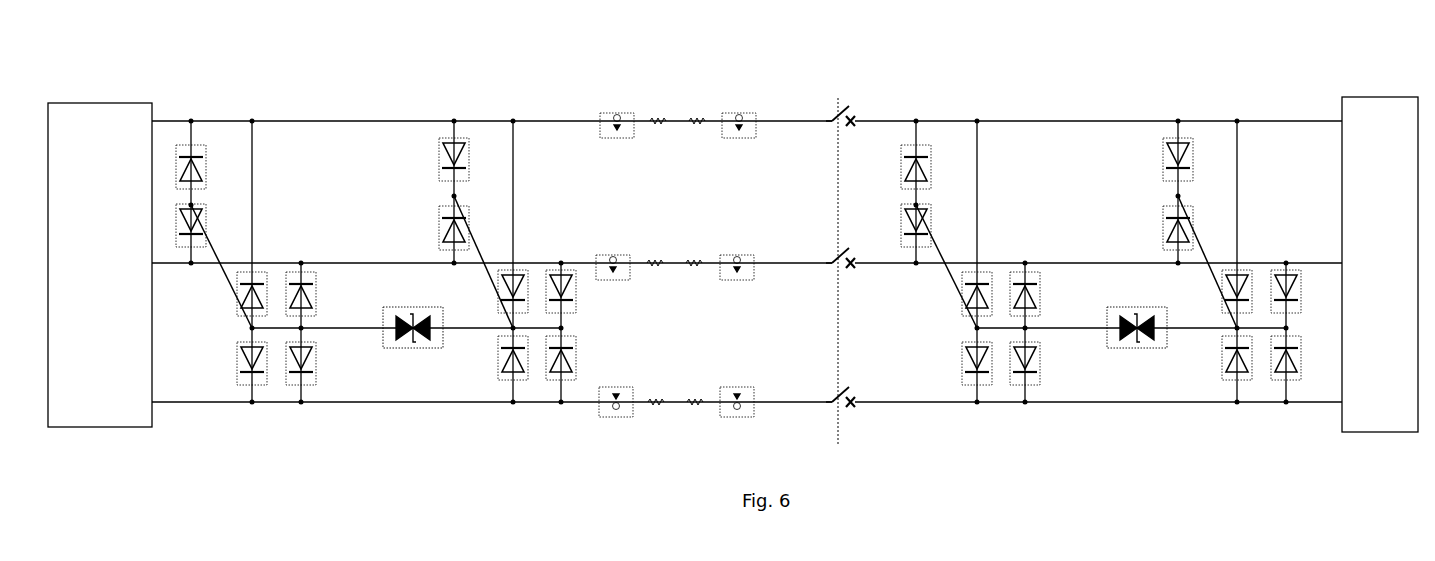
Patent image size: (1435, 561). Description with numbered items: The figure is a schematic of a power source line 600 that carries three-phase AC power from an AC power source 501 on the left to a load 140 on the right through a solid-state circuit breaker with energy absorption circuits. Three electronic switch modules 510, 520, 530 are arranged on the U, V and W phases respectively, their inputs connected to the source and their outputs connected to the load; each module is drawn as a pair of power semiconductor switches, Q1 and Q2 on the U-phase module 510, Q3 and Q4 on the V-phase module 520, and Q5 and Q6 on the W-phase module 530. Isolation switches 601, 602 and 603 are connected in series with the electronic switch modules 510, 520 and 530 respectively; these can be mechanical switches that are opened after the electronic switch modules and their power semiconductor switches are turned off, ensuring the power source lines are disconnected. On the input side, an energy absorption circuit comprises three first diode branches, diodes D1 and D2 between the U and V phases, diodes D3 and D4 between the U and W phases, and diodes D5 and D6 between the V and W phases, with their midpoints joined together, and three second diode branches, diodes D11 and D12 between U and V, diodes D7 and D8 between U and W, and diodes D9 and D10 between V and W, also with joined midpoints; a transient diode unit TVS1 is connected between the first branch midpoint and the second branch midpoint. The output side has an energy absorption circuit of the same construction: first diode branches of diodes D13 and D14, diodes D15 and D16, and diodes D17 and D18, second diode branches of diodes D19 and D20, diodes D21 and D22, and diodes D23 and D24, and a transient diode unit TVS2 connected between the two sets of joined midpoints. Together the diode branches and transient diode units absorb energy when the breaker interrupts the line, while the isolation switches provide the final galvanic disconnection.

The power source line 600 is at (733, 238).
The isolation switch 601 is at (828, 110).
The isolation switch 602 is at (828, 248).
The isolation switch 603 is at (828, 387).
The electronic switch module 510 is at (678, 138).
The electronic switch module 520 is at (675, 285).
The electronic switch module 530 is at (676, 407).
The AC power source 501 is at (100, 265).
The load 140 is at (1380, 264).
The diode D1 is at (199, 167).
The diode D2 is at (199, 225).
The diode D3 is at (242, 294).
The diode D4 is at (242, 363).
The diode D5 is at (309, 294).
The diode D6 is at (309, 363).
The diode D7 is at (502, 358).
The diode D8 is at (501, 291).
The diode D9 is at (554, 291).
The diode D10 is at (552, 358).
The diode D11 is at (442, 228).
The diode D12 is at (440, 159).
The diode D13 is at (928, 167).
The diode D14 is at (928, 225).
The diode D15 is at (963, 295).
The diode D16 is at (963, 363).
The diode D17 is at (1036, 363).
The diode D18 is at (1036, 297).
The diode D19 is at (1165, 159).
The diode D20 is at (1165, 228).
The diode D21 is at (1224, 291).
The diode D22 is at (1224, 358).
The diode D23 is at (1277, 358).
The diode D24 is at (1277, 291).
The transient diode unit TVS1 is at (413, 336).
The transient diode unit TVS2 is at (1137, 337).
The transistor Q1 is at (617, 137).
The transistor Q2 is at (739, 137).
The transistor Q3 is at (613, 280).
The transistor Q4 is at (737, 280).
The transistor Q5 is at (616, 393).
The transistor Q6 is at (737, 393).